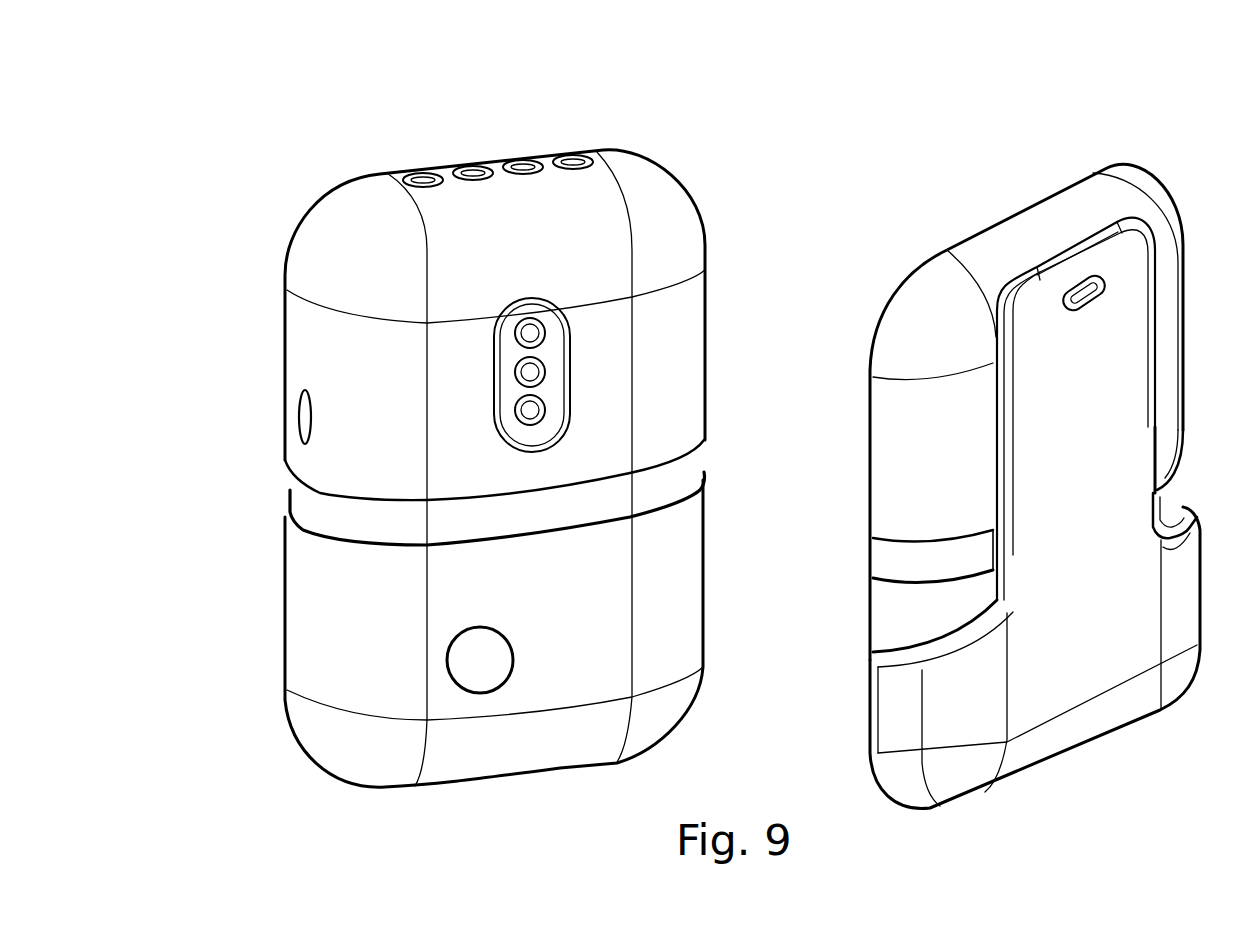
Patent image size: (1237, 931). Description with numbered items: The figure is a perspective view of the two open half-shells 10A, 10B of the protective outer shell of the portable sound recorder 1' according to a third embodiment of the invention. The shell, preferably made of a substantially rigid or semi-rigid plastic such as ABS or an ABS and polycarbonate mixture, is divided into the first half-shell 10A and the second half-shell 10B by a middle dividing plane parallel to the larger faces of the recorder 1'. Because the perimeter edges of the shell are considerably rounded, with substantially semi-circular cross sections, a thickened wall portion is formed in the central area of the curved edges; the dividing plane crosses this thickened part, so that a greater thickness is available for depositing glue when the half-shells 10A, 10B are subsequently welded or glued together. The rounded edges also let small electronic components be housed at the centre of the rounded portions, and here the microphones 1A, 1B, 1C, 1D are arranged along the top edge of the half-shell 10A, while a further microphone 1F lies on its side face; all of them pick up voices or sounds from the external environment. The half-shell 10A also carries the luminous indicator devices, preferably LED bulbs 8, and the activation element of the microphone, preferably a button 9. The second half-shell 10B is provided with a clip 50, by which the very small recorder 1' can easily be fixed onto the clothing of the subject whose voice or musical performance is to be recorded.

The portable sound recorder 1' is at (818, 121).
The microphone 1A is at (572, 158).
The microphone 1B is at (518, 163).
The microphone 1C is at (472, 170).
The microphone 1D is at (420, 176).
The microphone 1F is at (297, 417).
The LED bulbs 8 is at (533, 333).
The button 9 is at (476, 658).
The half-shell 10A is at (342, 255).
The half-shell 10B is at (1047, 218).
The clip 50 is at (1073, 485).